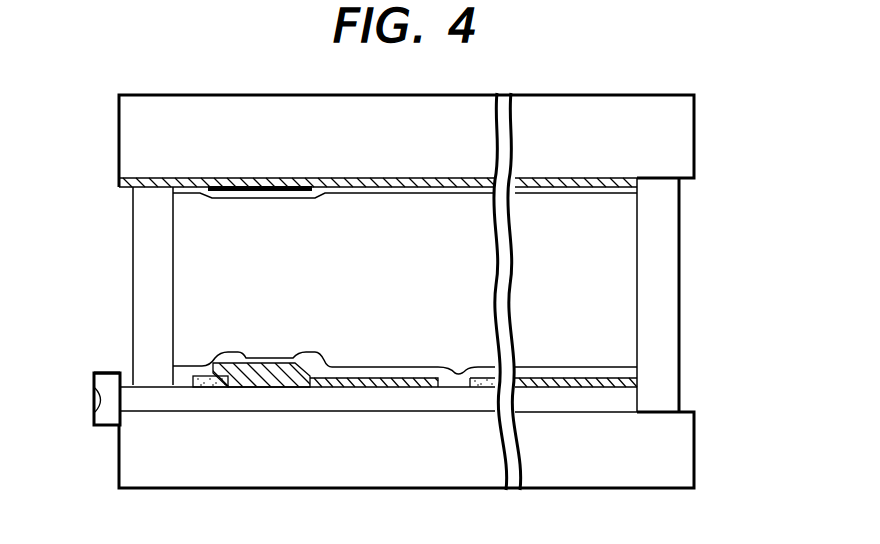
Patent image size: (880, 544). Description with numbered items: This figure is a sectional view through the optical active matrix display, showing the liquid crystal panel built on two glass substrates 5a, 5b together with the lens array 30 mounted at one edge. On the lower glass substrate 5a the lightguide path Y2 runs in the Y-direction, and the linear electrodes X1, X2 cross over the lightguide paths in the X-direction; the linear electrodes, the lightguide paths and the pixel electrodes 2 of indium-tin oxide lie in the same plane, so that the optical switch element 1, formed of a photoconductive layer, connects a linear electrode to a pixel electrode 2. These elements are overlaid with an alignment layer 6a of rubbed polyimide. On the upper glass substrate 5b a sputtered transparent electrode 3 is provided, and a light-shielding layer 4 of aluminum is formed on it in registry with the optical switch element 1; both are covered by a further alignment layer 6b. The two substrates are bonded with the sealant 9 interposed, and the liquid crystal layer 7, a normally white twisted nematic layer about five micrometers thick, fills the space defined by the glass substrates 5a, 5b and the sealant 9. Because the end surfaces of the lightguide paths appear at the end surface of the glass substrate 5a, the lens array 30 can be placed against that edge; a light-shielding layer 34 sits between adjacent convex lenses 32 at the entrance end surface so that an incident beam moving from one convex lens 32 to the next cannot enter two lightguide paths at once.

The optical switch element 1 is at (282, 368).
The pixel electrode 2 is at (375, 380).
The transparent electrode 3 is at (378, 184).
The light-shielding layer 4 is at (286, 192).
The glass substrate 5a is at (685, 452).
The glass substrate 5b is at (683, 144).
The alignment layer 6a is at (247, 355).
The alignment layer 6b is at (225, 199).
The liquid crystal layer 7 is at (618, 231).
The sealant 9 is at (672, 288).
The lens array 30 is at (107, 376).
The convex lens 32 is at (96, 401).
The light-shielding layer 34 is at (93, 378).
The linear electrode X1 is at (210, 388).
The linear electrode X2 is at (488, 390).
The lightguide path Y2 is at (170, 405).